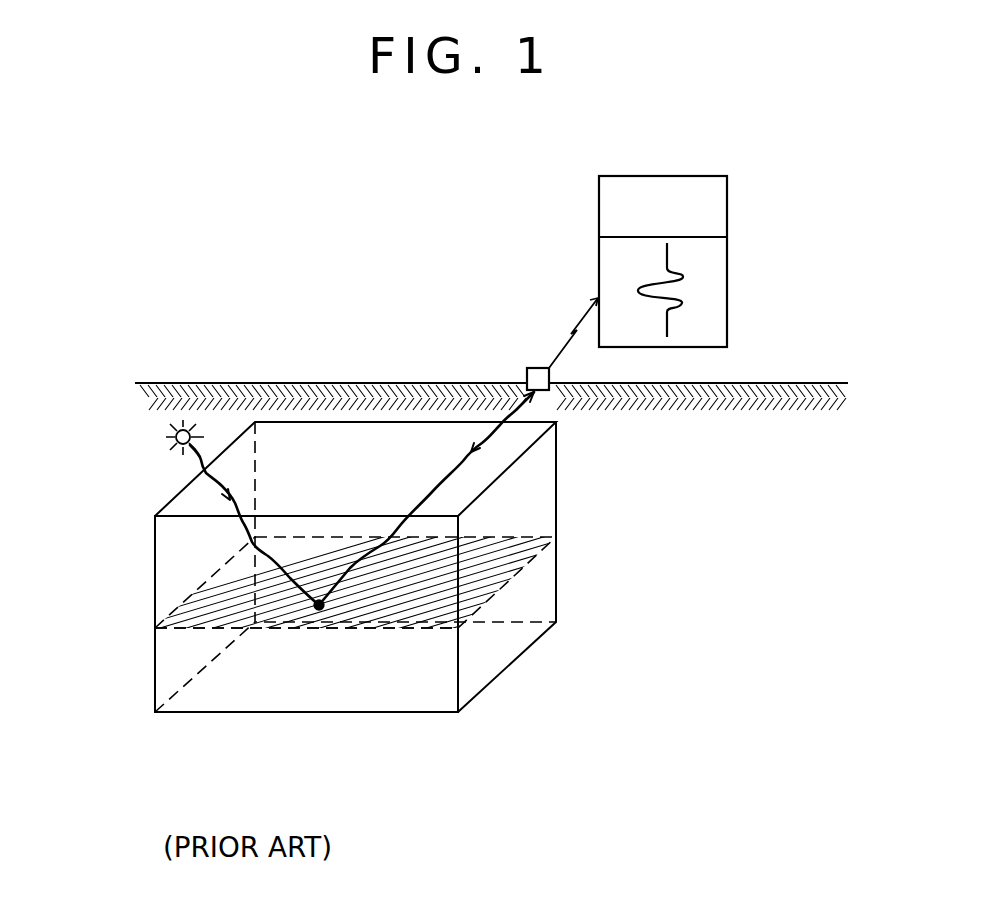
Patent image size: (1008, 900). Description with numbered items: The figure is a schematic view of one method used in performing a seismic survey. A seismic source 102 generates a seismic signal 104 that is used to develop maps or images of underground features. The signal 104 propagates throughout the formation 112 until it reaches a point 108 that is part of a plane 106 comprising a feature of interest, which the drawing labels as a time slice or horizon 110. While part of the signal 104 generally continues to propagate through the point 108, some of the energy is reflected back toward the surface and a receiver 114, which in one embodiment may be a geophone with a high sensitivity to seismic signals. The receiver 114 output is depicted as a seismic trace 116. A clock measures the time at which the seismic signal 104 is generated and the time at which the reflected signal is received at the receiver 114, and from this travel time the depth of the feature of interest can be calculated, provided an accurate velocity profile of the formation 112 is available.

The seismic source 102 is at (170, 433).
The seismic signal 104 is at (200, 466).
The plane 106 is at (192, 632).
The point 108 is at (321, 612).
The time slice or horizon 110 is at (532, 572).
The formation 112 is at (558, 497).
The receiver 114 is at (526, 368).
The seismic trace display 116 is at (712, 261).